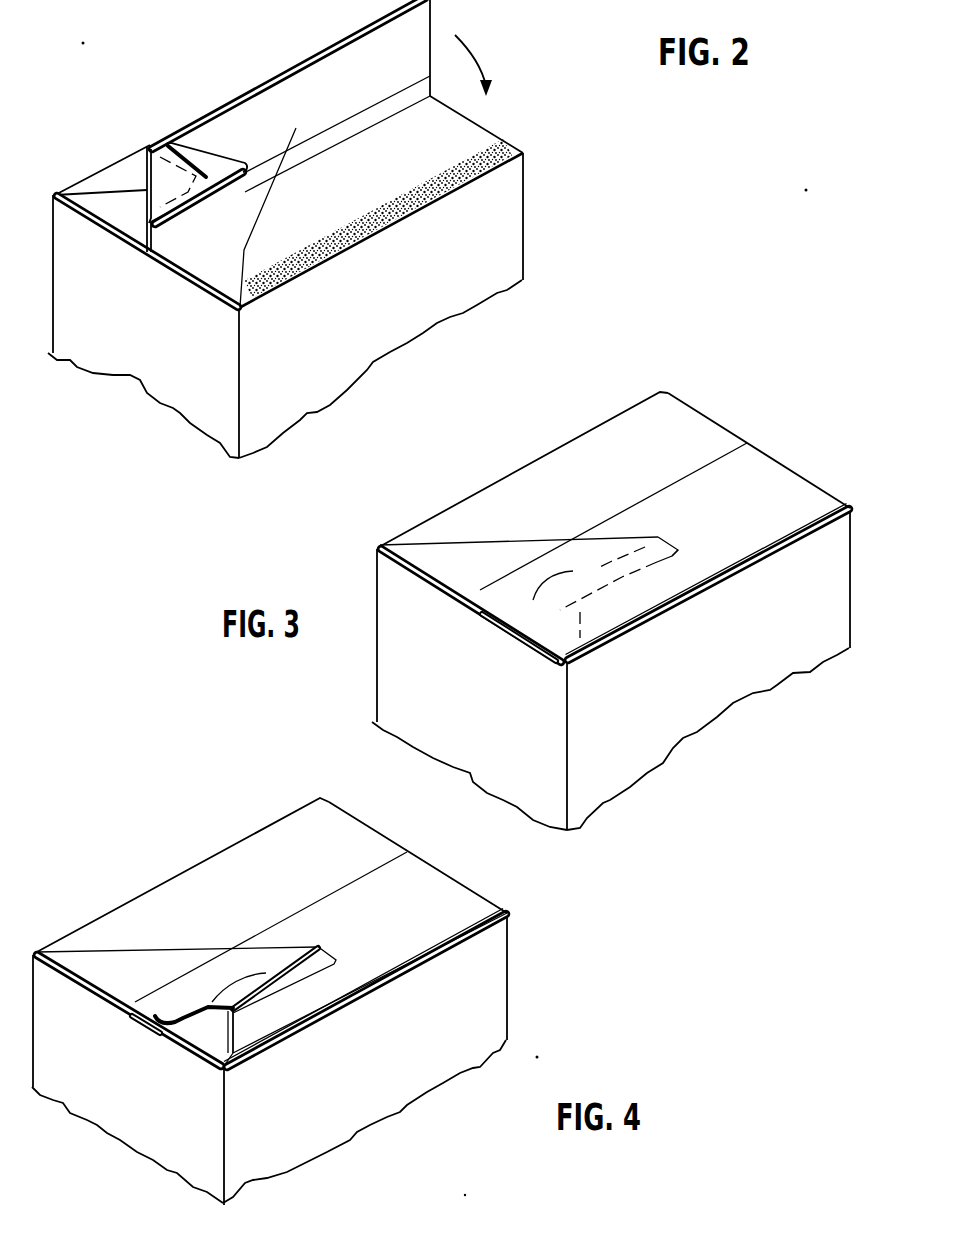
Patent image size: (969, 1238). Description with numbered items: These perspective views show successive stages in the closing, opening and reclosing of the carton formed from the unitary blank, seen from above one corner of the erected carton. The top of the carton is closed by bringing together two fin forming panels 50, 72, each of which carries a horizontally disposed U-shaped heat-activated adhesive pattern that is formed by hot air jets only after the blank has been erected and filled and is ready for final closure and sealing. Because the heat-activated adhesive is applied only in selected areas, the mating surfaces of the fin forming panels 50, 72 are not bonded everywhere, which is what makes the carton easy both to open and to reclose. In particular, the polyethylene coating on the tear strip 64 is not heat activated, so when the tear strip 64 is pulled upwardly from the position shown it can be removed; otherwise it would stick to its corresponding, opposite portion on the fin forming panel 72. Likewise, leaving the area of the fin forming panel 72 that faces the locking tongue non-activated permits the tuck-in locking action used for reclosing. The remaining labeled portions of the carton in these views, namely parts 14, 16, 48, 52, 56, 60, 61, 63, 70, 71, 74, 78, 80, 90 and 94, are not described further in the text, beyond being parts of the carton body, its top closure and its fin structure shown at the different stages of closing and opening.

In FIG. 2, the first side wall of container 14 is at (137, 334).
In FIG. 3, the first side wall of container 14 is at (438, 684).
In FIG. 4, the first side wall of container 14 is at (128, 1102).
In FIG. 2, the second side wall of container 16 is at (377, 322).
In FIG. 3, the second side wall of container 16 is at (700, 674).
In FIG. 4, the second side wall of container 16 is at (341, 1096).
In FIG. 2, the top panel 48 is at (103, 175).
In FIG. 3, the top panel 48 is at (616, 472).
In FIG. 4, the top panel 48 is at (277, 884).
In FIG. 3, the fin forming panel 50 is at (743, 508).
In FIG. 4, the fin forming panel 50 is at (398, 922).
In FIG. 2, the corner panel 52 is at (134, 222).
In FIG. 3, the corner panel 52 is at (484, 576).
In FIG. 4, the corner panel 52 is at (144, 982).
In FIG. 3, the locking tab 56 is at (631, 537).
In FIG. 4, the locking tab 56 is at (287, 947).
In FIG. 3, the pointed end of locking tab 60 is at (679, 552).
In FIG. 4, the hook portion 61 is at (181, 1013).
In FIG. 3, the fold line of tab 63 is at (573, 571).
In FIG. 4, the fold line of tab 63 is at (231, 980).
In FIG. 2, the tear strip 64 is at (150, 165).
In FIG. 3, the tear strip 64 is at (556, 617).
In FIG. 2, the lid panel 70 is at (359, 192).
In FIG. 2, the hinge fold line 71 is at (410, 99).
In FIG. 4, the hinge fold line 71 is at (137, 1024).
In FIG. 2, the fin forming panel 72 is at (365, 86).
In FIG. 4, the fin forming panel 72 is at (303, 972).
In FIG. 2, the inner strip panel 74 is at (226, 256).
In FIG. 4, the inner strip panel 74 is at (203, 1032).
In FIG. 2, the gusset fold line 78 is at (284, 146).
In FIG. 2, the slot 80 is at (250, 158).
In FIG. 2, the score line 90 is at (359, 135).
In FIG. 2, the adhesive strip 94 is at (503, 138).